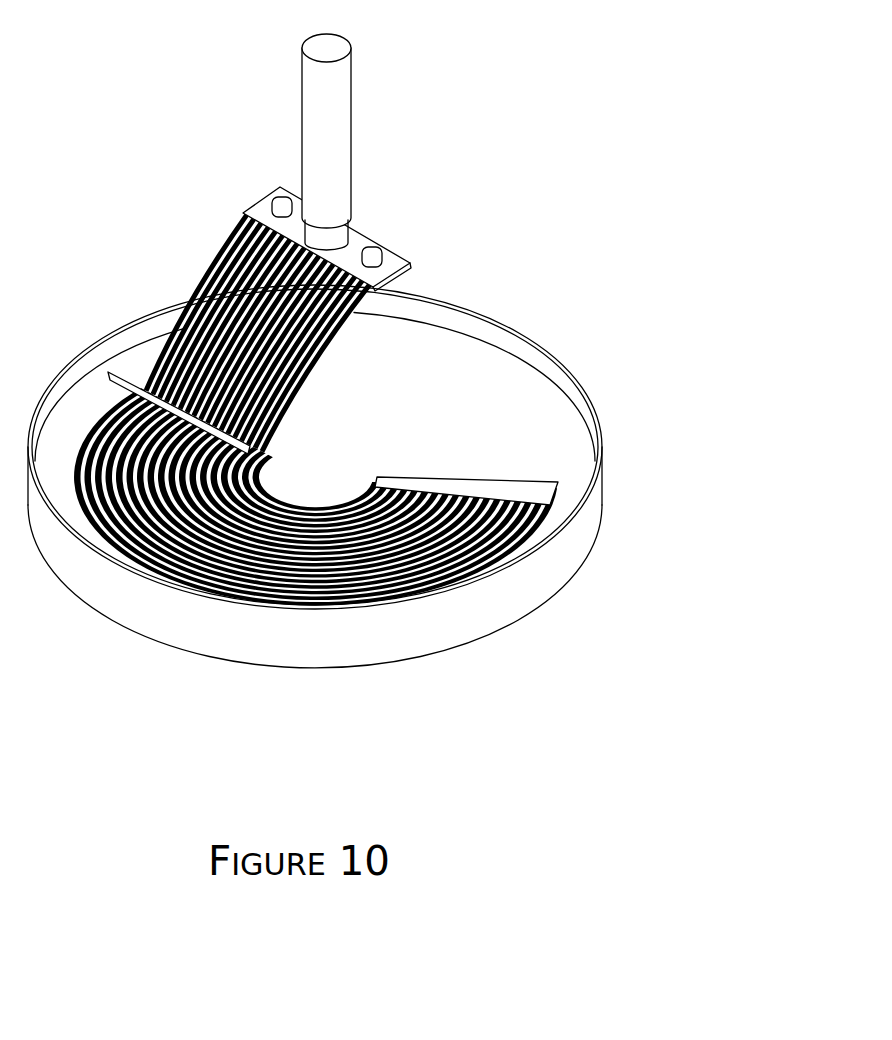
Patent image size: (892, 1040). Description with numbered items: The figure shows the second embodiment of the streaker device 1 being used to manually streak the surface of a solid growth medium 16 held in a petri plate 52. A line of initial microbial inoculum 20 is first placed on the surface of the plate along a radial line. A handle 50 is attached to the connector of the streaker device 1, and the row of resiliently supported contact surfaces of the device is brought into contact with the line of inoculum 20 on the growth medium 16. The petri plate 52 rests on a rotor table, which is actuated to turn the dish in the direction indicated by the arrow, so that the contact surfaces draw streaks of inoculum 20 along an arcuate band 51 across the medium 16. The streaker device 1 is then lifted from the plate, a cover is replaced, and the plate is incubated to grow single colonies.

The streaker device 1 is at (207, 270).
The solid growth medium 16 is at (470, 413).
The microbial inoculum 20 is at (522, 487).
The handle 50 is at (328, 88).
The arcuate band 51 is at (298, 482).
The petri plate 52 is at (565, 563).